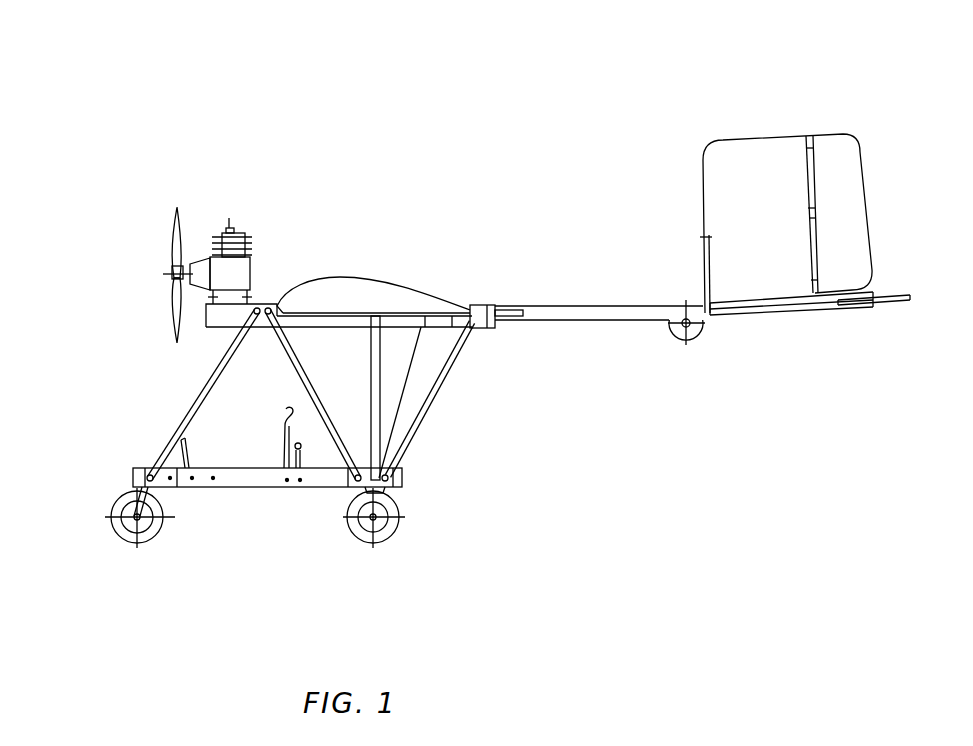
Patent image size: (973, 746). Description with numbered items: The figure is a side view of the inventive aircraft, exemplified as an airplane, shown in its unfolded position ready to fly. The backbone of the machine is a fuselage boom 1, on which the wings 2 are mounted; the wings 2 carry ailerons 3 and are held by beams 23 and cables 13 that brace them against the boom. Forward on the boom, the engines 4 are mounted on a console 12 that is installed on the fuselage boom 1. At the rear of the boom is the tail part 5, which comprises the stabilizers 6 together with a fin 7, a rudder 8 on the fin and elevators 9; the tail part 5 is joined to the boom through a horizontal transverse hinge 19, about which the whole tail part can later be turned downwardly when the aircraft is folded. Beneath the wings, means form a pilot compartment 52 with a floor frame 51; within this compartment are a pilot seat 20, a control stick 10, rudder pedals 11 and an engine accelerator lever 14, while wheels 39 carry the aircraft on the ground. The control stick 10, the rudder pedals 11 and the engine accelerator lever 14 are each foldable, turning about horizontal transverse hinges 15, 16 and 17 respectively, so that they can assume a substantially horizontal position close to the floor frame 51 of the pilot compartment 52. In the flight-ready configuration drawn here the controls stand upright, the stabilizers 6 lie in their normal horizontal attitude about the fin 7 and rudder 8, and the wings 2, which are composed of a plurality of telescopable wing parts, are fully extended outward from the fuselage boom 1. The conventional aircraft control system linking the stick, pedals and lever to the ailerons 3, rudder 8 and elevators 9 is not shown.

The fuselage boom 1 is at (570, 305).
The wings 2 is at (373, 212).
The ailerons 3 is at (583, 397).
The engines 4 is at (221, 201).
The tail part 5 is at (806, 389).
The stabilizers 6 is at (791, 389).
The fin 7 is at (786, 178).
The rudder 8 is at (853, 168).
The elevators 9 is at (904, 174).
The control stick 10 is at (194, 372).
The rudder pedals 11 is at (142, 399).
The console 12 is at (249, 219).
The cables 13 is at (348, 383).
The engine accelerator lever 14 is at (385, 543).
The horizontal transverse hinge 15 is at (267, 538).
The horizontal transverse hinge 16 is at (246, 532).
The horizontal transverse hinge 17 is at (321, 520).
The horizontal transverse hinge 19 is at (673, 228).
The pilot seat 20 is at (525, 429).
The beams 23 is at (444, 296).
The wheels 39 is at (440, 542).
The floor frame 51 is at (177, 537).
The pilot compartment 52 is at (224, 514).